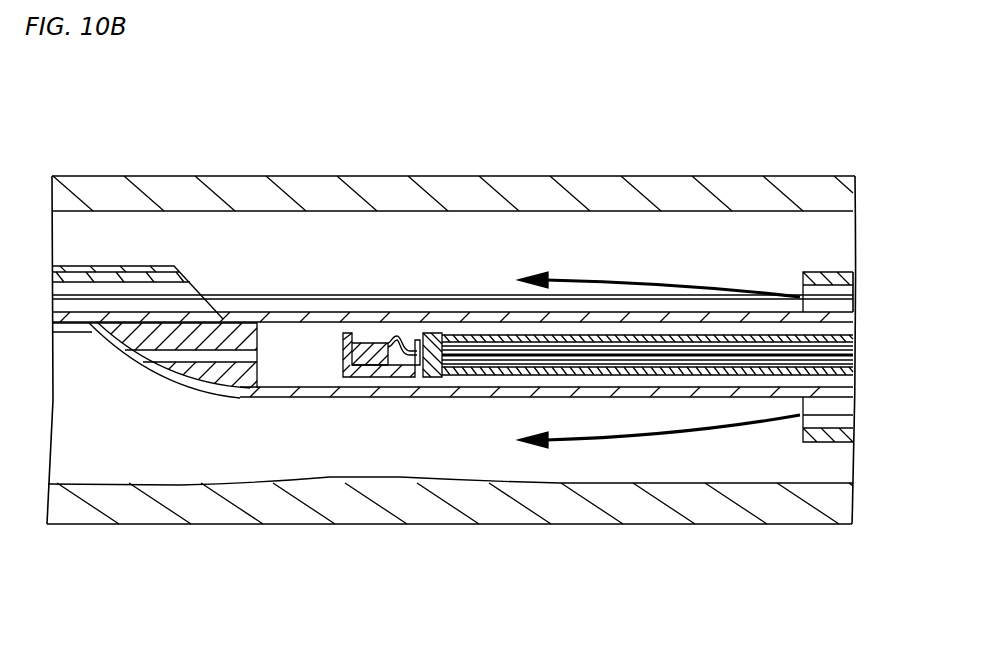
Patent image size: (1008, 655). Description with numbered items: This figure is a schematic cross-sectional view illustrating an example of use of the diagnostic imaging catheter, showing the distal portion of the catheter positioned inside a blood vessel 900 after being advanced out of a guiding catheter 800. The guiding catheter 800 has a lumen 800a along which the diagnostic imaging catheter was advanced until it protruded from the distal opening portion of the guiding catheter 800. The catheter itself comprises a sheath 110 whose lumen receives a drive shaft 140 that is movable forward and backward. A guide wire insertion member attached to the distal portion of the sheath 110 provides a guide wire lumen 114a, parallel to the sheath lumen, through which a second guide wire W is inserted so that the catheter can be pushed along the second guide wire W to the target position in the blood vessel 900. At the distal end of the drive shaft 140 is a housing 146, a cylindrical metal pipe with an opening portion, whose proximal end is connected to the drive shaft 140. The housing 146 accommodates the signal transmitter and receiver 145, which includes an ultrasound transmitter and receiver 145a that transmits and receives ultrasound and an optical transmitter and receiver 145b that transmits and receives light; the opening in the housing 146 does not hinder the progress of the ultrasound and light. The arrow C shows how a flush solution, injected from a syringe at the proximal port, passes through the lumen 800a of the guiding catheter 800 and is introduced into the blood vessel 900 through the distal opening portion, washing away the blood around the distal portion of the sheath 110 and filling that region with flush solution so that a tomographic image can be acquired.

The blood vessel 900 is at (80, 184).
The guide wire lumen 114a is at (179, 264).
The second guide wire W is at (250, 292).
The drive shaft 140 is at (462, 322).
The signal transmitter and receiver 145 is at (445, 578).
The ultrasound transmitter and receiver 145a is at (368, 368).
The optical transmitter and receiver 145b is at (415, 366).
The housing 146 is at (347, 332).
The sheath 110 is at (497, 399).
The guiding catheter 800 is at (818, 271).
The lumen 800a is at (838, 290).
The arrow C is at (628, 278).